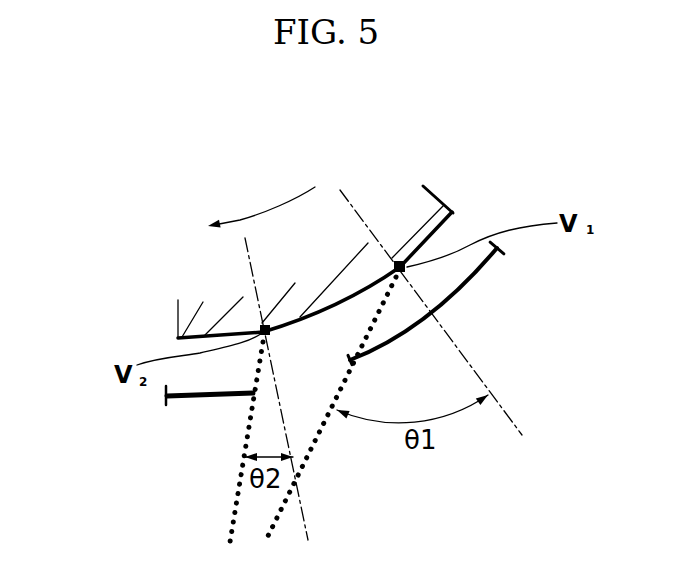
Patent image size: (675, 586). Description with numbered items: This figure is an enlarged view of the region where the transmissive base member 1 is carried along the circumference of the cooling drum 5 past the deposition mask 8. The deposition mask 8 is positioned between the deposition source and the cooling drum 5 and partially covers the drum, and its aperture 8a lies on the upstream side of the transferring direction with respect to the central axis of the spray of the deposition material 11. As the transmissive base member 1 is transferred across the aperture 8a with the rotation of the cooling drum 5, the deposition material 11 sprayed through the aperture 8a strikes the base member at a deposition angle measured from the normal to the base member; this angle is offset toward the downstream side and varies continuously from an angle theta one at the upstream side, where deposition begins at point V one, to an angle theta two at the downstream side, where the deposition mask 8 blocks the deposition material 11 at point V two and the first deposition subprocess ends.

The transmissive base member 1 is at (447, 222).
The cooling drum 5 is at (387, 198).
The deposition mask 8 is at (467, 290).
The aperture 8a is at (299, 391).
The deposition material 11 is at (330, 455).